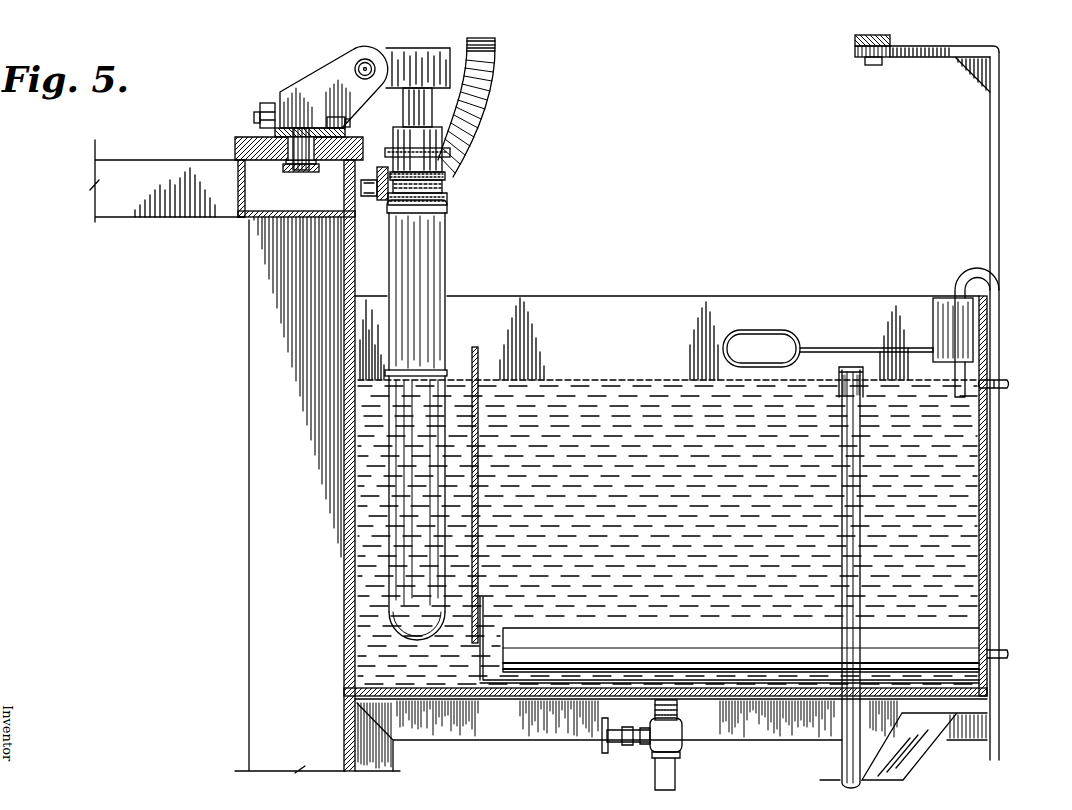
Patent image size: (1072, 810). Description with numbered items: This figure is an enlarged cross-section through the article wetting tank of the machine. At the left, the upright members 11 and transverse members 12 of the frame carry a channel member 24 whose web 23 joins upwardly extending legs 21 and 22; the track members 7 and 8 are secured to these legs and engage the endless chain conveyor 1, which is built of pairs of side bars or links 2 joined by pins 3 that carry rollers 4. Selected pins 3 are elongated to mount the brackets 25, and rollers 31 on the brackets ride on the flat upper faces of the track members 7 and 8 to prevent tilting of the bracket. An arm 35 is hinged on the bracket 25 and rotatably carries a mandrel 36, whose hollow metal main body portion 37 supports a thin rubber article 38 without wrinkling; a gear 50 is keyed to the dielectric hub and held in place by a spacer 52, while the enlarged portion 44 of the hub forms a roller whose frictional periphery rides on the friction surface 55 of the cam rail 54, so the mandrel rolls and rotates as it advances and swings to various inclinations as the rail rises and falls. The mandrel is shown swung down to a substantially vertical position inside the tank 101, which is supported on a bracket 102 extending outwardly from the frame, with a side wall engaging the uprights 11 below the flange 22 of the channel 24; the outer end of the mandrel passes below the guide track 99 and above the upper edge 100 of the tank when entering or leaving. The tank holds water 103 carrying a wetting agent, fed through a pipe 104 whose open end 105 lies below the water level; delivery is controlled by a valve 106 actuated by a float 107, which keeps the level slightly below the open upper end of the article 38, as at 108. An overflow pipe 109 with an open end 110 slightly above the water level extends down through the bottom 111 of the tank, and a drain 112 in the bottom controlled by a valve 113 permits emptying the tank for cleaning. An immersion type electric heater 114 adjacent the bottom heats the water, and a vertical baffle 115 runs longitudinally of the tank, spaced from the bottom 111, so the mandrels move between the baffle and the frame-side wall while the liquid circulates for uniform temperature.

The endless chain conveyor 1 is at (294, 160).
The side bars or links 2 is at (300, 166).
The pin 3 is at (305, 171).
The roller 4 is at (272, 133).
The track member 7 is at (235, 147).
The outer track member 8 is at (346, 132).
The upright members 11 is at (247, 556).
The transverse members 12 is at (128, 166).
The leg of channel member 21 is at (238, 190).
The leg or flange of channel member 22 is at (350, 198).
The web of channel member 23 is at (290, 212).
The channel member 24 is at (242, 218).
The bracket 25 is at (296, 82).
The rollers 31 is at (260, 105).
The arm 35 is at (406, 50).
The mandrel 36 is at (440, 262).
The main body portion of mandrel 37 is at (440, 292).
The rubber article 38 is at (398, 576).
The enlarged portion of hub 44 is at (448, 182).
The gear 50 is at (450, 155).
The spacer 52 is at (432, 107).
The cam rail 54 is at (490, 80).
The friction surface 55 is at (492, 45).
The guide track 99 is at (855, 43).
The upper edge of tank 100 is at (648, 296).
The tank 101 is at (346, 672).
The bracket 102 is at (930, 740).
The water 103 is at (596, 384).
The pipe 104 is at (1000, 340).
The open end of pipe 105 is at (992, 400).
The valve 106 is at (934, 320).
The float 107 is at (762, 327).
The water level location 108 is at (450, 367).
The overflow pipe 109 is at (862, 542).
The open end of overflow pipe 110 is at (862, 350).
The bottom of tank 111 is at (548, 696).
The drain 112 is at (678, 704).
The valve 113 is at (682, 744).
The immersion type electric heater 114 is at (714, 642).
The vertical partition or baffle 115 is at (479, 366).